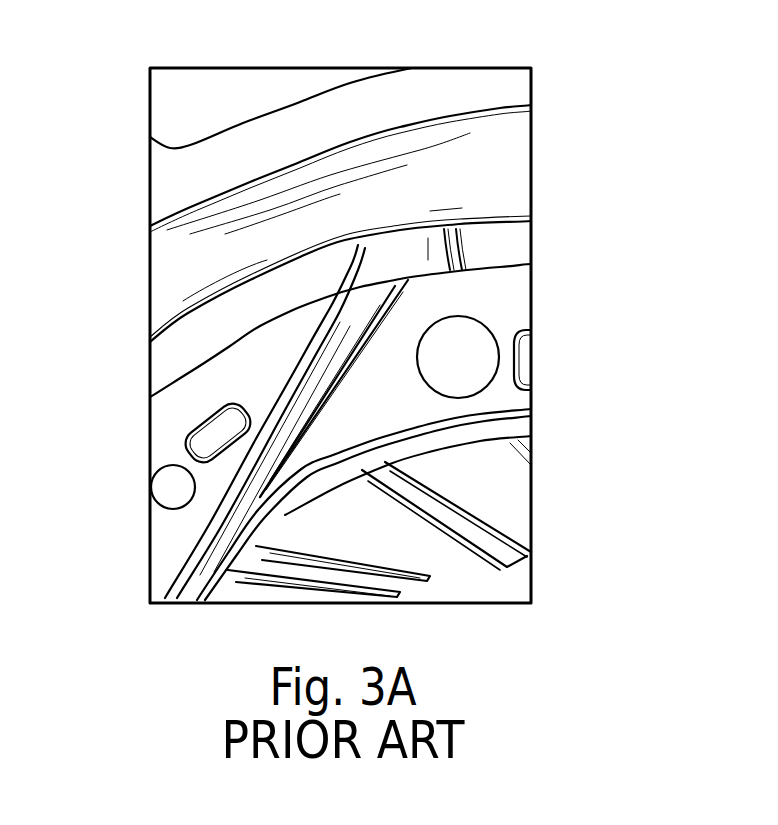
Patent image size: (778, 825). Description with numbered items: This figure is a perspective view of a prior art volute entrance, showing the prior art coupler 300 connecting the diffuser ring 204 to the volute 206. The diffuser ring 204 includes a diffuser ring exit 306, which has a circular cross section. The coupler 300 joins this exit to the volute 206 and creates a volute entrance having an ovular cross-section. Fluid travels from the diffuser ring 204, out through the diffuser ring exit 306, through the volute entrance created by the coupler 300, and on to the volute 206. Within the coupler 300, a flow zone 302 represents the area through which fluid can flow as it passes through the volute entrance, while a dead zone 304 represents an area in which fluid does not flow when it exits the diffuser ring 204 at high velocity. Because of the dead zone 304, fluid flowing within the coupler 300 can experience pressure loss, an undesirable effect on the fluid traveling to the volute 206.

The volute 206 is at (435, 177).
The coupler 300 is at (362, 288).
The flow zone 302 is at (363, 271).
The dead zone 304 is at (467, 260).
The diffuser ring 204 is at (513, 285).
The diffuser ring exit 306 is at (408, 281).